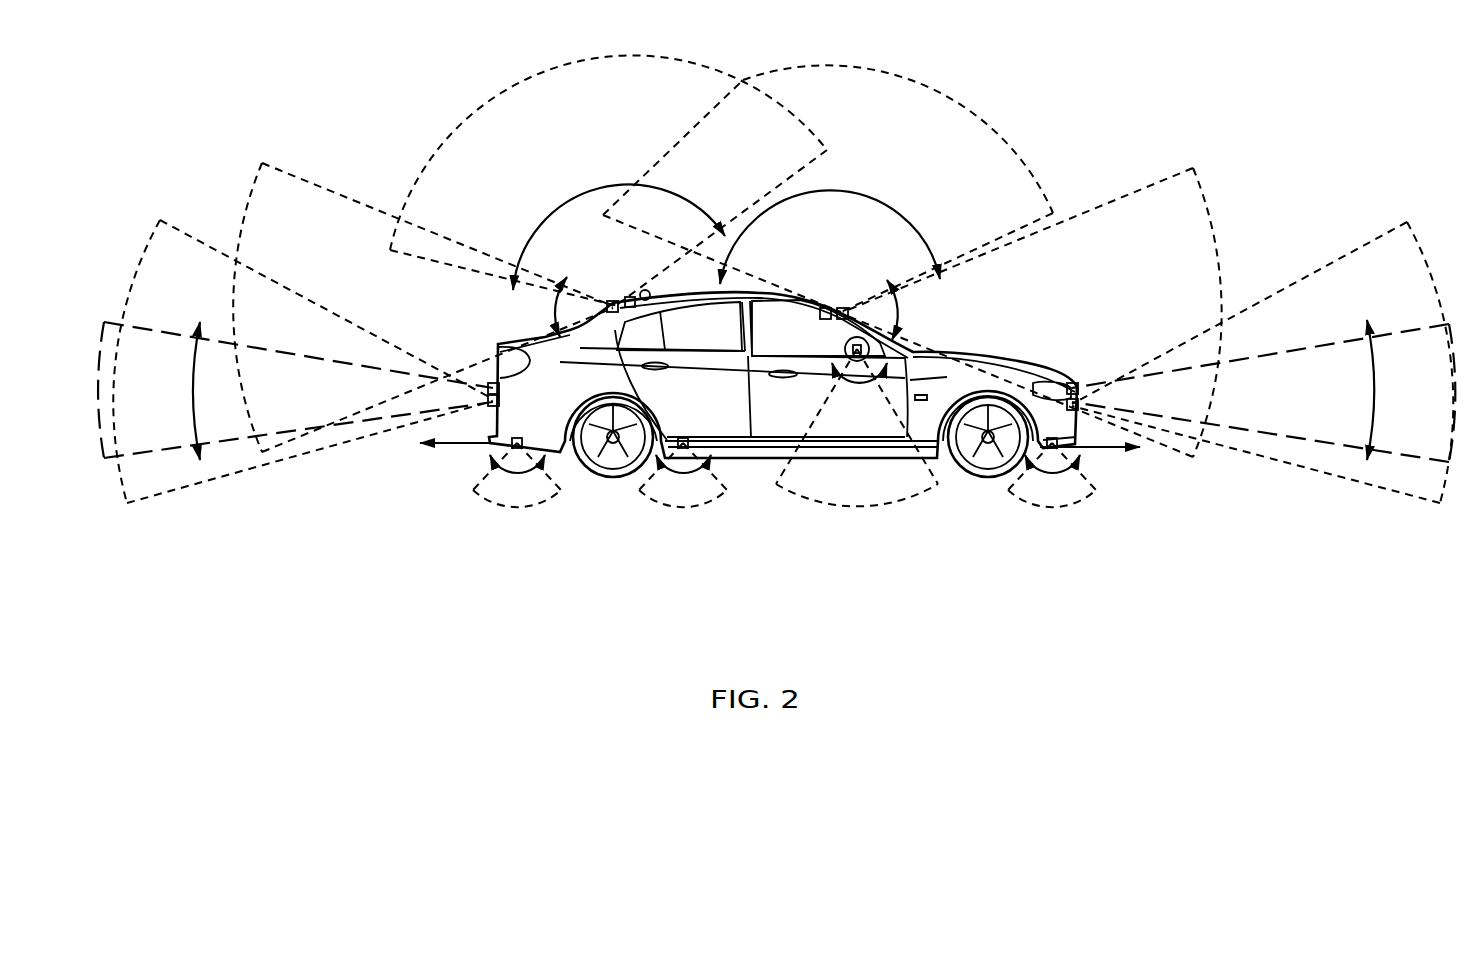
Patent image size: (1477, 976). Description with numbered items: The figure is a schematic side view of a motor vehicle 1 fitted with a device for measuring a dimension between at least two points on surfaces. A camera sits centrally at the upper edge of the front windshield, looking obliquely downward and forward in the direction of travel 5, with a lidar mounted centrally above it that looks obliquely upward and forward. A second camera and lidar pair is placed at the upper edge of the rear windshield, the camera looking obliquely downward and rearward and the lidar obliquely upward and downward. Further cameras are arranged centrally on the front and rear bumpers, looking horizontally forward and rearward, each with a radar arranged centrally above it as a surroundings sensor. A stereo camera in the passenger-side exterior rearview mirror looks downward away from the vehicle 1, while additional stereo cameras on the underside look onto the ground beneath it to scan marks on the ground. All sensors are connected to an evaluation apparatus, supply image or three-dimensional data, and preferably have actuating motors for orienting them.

The vehicle 1 is at (752, 450).
The direction of travel 5 is at (415, 448).